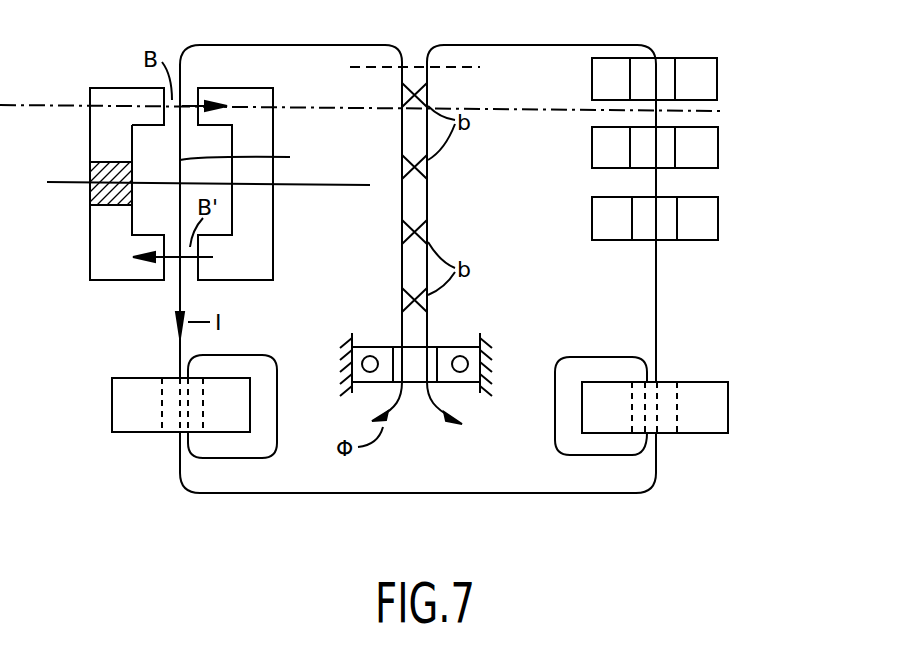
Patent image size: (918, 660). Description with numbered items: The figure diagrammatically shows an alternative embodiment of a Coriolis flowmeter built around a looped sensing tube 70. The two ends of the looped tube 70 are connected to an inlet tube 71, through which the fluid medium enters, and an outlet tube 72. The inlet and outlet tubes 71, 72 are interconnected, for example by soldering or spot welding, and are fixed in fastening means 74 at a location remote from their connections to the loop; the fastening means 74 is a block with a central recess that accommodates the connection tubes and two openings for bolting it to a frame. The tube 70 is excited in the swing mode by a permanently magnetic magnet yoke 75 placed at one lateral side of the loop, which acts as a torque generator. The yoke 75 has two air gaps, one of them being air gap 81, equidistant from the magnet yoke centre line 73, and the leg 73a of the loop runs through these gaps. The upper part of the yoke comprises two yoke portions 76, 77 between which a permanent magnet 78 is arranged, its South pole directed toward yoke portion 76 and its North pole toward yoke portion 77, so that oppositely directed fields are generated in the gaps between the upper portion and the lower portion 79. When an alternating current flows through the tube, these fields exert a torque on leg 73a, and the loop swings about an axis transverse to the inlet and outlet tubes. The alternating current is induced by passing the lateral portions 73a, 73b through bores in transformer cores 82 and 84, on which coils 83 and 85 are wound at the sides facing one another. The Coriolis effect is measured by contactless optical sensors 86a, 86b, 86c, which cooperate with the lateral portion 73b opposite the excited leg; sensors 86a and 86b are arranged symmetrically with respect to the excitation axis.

The looped sensing tube 70 is at (320, 45).
The inlet tube 71 is at (399, 146).
The outlet tube 72 is at (430, 205).
The magnet yoke centre line 73 is at (293, 187).
The leg of the loop 73a is at (257, 154).
The lateral portion of the loop 73b is at (658, 302).
The fastening means 74 is at (378, 346).
The magnet yoke 75 is at (90, 170).
The yoke portion 76 is at (107, 257).
The yoke portion 77 is at (102, 102).
The permanent magnet 78 is at (92, 178).
The lower portion of the magnet yoke 79 is at (247, 103).
The air gap 81 is at (188, 102).
The transformer core 82 is at (143, 410).
The coil 83 is at (230, 442).
The transformer core 84 is at (710, 413).
The coil 85 is at (595, 440).
The optical sensor 86a is at (700, 77).
The optical sensor 86b is at (703, 150).
The optical sensor 86c is at (700, 222).